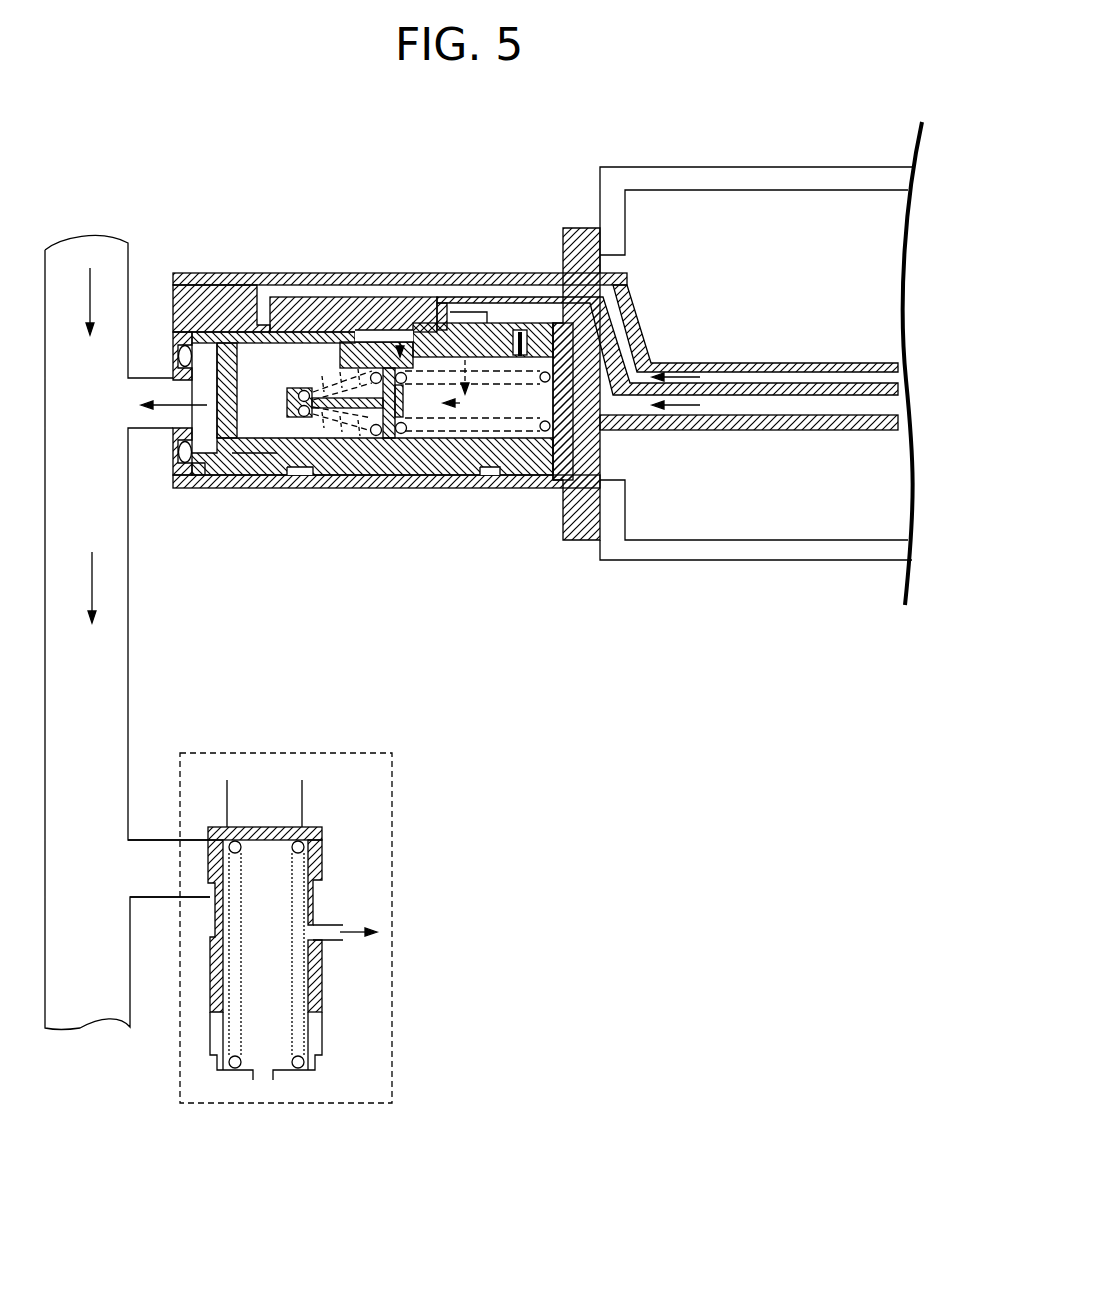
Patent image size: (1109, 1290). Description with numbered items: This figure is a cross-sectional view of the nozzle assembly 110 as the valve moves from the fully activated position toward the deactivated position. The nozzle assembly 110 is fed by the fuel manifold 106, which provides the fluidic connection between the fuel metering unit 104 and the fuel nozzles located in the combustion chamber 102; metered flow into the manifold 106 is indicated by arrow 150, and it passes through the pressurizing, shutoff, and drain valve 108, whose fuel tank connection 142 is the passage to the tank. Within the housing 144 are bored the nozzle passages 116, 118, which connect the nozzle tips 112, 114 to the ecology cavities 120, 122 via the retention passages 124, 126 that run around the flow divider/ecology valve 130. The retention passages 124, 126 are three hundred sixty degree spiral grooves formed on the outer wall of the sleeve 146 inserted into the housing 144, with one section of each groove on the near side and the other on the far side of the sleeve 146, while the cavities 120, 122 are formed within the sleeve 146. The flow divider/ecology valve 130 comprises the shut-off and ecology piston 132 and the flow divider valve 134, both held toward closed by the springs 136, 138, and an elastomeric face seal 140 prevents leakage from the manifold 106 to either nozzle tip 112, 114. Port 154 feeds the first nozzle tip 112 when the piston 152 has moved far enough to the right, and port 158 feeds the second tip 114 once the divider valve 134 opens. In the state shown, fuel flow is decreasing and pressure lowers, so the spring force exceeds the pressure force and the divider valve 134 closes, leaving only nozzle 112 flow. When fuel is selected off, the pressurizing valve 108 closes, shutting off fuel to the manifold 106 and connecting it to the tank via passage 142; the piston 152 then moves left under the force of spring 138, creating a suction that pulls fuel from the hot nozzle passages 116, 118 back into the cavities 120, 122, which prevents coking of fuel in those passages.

The combustion chamber 102 is at (756, 178).
The fuel metering unit 104 is at (387, 1023).
The fuel manifold 106 is at (120, 686).
The pressurizing, shutoff, and drain valve 108 is at (322, 875).
The nozzle assembly 110 is at (256, 264).
The nozzle tip 112 is at (890, 362).
The nozzle tip 114 is at (888, 402).
The nozzle passage 116 is at (412, 274).
The nozzle passage 118 is at (552, 313).
The ecology cavity 120 is at (443, 274).
The ecology cavity 122 is at (528, 488).
The retention passage 124 is at (300, 414).
The retention passage 126 is at (408, 434).
The flow divider/ecology valve 130 is at (173, 388).
The shut-off and ecology piston 132 is at (233, 488).
The flow divider valve 134 is at (390, 488).
The spring 136 is at (280, 368).
The spring 138 is at (630, 348).
The elastomeric face seal 140 is at (177, 353).
The fuel tank connection 142 is at (345, 927).
The housing 144 is at (192, 276).
The sleeve 146 is at (243, 488).
The arrow 150 is at (196, 879).
The piston 152 is at (203, 490).
The port 154 is at (355, 275).
The port 158 is at (517, 330).